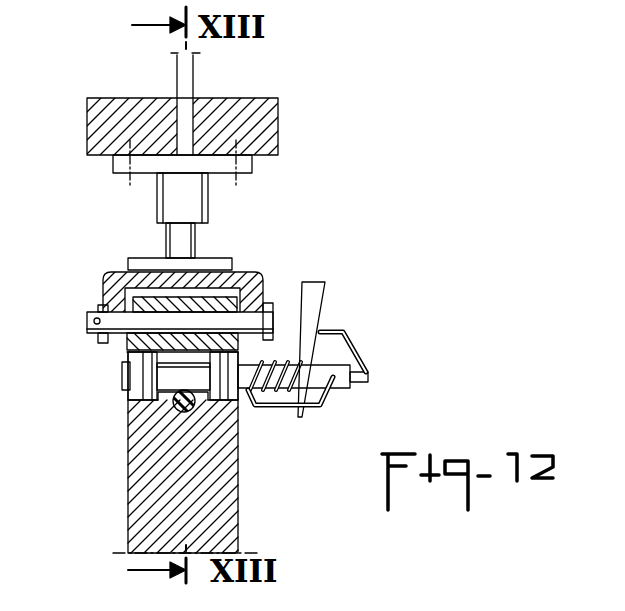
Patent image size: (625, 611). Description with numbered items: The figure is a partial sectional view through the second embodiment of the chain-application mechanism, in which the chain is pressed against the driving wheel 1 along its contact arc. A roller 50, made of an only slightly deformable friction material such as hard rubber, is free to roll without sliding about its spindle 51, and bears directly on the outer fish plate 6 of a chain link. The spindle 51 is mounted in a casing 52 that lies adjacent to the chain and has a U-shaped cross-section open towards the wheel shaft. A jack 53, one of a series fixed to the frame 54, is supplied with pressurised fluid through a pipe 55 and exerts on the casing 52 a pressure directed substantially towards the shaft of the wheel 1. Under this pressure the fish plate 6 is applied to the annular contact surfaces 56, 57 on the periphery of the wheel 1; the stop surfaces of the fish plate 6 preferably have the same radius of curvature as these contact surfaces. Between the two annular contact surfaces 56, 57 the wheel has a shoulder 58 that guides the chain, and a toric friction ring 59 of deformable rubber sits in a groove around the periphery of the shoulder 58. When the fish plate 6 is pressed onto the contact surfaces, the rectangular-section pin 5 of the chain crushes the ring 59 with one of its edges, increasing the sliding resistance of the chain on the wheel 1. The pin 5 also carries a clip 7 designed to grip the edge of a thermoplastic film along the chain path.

The driving wheel 1 is at (150, 495).
The pins 5 is at (195, 373).
The outer fish plates 6 is at (138, 383).
The clips 7 is at (362, 340).
The rollers 50 is at (130, 300).
The spindles 51 is at (103, 343).
The casing 52 is at (104, 283).
The jacks 53 is at (217, 210).
The frame 54 is at (270, 124).
The pipes 55 is at (187, 72).
The annular contact surface 56 is at (147, 406).
The annular contact surface 57 is at (222, 406).
The shoulder 58 is at (200, 400).
The toric friction ring 59 is at (184, 413).